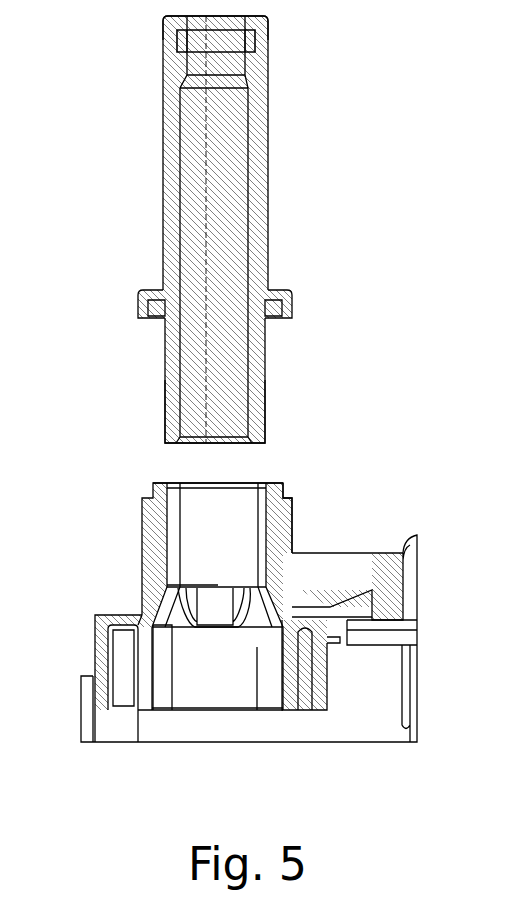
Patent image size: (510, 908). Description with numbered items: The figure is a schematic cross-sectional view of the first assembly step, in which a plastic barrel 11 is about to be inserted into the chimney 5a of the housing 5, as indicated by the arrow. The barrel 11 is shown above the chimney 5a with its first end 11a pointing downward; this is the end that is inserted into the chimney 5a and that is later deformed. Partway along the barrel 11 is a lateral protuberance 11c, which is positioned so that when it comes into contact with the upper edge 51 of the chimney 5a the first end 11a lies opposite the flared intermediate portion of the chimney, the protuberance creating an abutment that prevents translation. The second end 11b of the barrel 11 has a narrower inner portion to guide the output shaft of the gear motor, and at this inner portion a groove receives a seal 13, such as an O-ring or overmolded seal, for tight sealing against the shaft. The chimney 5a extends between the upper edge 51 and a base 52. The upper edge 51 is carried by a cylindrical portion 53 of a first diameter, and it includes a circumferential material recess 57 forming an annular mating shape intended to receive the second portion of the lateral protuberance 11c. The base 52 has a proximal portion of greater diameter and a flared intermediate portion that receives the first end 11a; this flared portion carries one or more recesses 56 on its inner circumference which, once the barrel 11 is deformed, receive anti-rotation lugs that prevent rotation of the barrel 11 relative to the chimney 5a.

The housing 5 is at (397, 548).
The chimney 5a is at (138, 512).
The barrel 11 is at (160, 142).
The first end of the barrel 11a is at (267, 382).
The second end of the barrel 11b is at (163, 33).
The lateral protuberance 11c is at (140, 292).
The seal 13 is at (268, 33).
The upper edge 51 is at (283, 483).
The base 52 is at (257, 655).
The cylindrical portion 53 is at (258, 542).
The recesses 56 is at (172, 598).
The circumferential material recess 57 is at (286, 496).